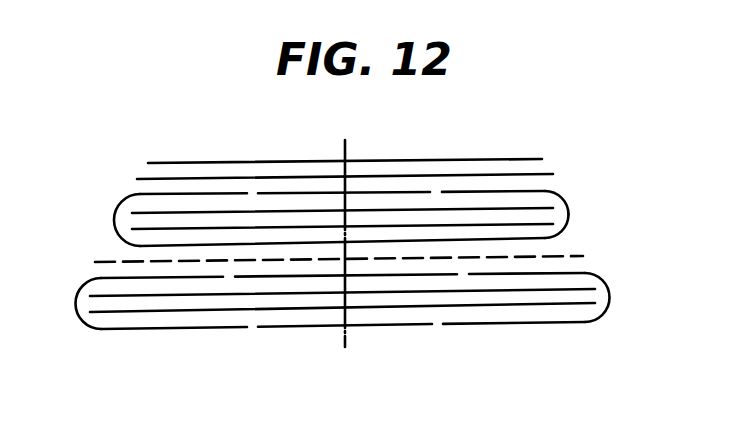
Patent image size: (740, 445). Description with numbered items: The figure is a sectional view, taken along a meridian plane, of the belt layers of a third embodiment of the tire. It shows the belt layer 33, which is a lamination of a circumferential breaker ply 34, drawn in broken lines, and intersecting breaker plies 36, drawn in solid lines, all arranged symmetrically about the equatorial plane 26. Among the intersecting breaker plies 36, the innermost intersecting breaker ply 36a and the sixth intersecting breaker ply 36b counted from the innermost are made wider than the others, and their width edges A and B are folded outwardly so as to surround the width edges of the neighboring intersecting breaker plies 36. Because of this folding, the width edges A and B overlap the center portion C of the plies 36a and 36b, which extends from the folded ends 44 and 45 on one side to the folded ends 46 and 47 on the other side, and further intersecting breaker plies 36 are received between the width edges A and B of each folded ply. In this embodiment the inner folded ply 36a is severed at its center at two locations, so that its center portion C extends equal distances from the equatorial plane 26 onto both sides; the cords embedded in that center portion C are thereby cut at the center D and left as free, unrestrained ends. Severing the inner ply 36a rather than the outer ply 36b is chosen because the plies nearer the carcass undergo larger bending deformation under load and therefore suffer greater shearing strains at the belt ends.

The equatorial plane 26 is at (347, 148).
The belt layer 33 is at (549, 159).
The circumferential breaker ply 34 is at (570, 257).
The intersecting breaker plies 36 is at (412, 224).
The innermost intersecting breaker ply 36a is at (492, 325).
The sixth intersecting breaker ply 36b is at (565, 197).
The folded end 44 is at (78, 292).
The folded end 45 is at (115, 213).
The folded end 46 is at (608, 300).
The folded end 47 is at (570, 208).
The width edge A is at (207, 194).
The width edge B is at (468, 192).
The center portion C is at (143, 250).
The center D is at (250, 330).